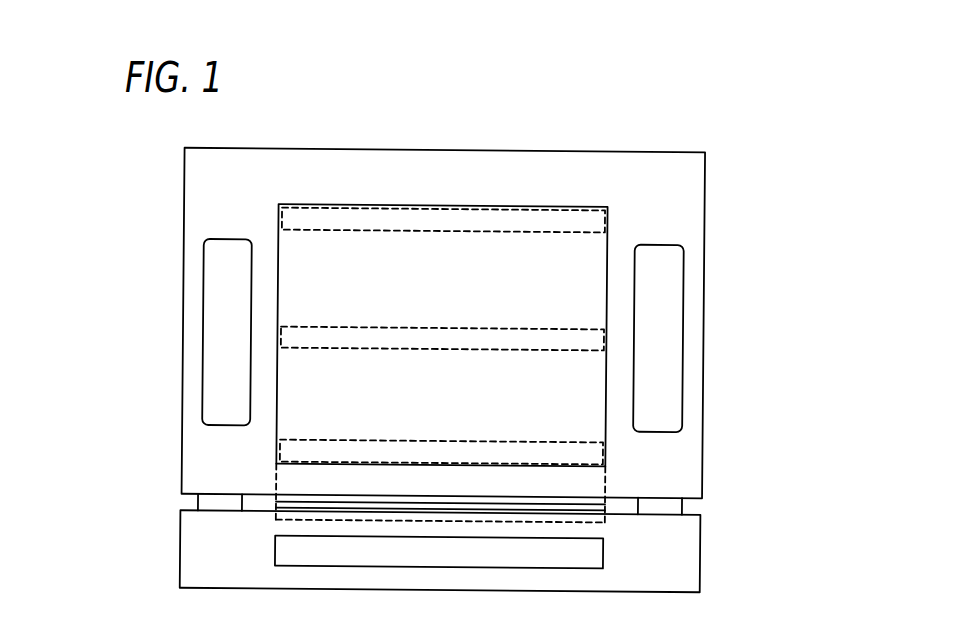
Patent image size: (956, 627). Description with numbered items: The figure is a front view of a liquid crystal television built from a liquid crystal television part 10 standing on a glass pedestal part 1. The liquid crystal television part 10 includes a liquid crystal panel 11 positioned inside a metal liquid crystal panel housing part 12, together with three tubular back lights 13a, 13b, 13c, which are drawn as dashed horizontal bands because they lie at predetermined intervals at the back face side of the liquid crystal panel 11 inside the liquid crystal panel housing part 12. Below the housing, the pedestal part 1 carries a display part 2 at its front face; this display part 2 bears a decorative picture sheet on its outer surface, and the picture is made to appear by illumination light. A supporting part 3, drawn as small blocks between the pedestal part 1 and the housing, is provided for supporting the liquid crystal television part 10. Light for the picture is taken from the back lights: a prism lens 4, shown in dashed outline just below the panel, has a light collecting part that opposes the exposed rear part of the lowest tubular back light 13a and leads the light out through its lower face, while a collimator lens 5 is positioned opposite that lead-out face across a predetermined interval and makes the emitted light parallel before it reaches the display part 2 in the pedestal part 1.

The pedestal part 1 is at (702, 580).
The display part 2 is at (592, 556).
The supporting part 3 is at (200, 504).
The prism lens 4 is at (278, 486).
The collimator lens 5 is at (278, 521).
The liquid crystal television part 10 is at (704, 245).
The liquid crystal panel 11 is at (450, 318).
The liquid crystal panel housing part 12 is at (278, 296).
The tubular back light 13a is at (570, 441).
The tubular back light 13b is at (572, 328).
The tubular back light 13c is at (582, 206).